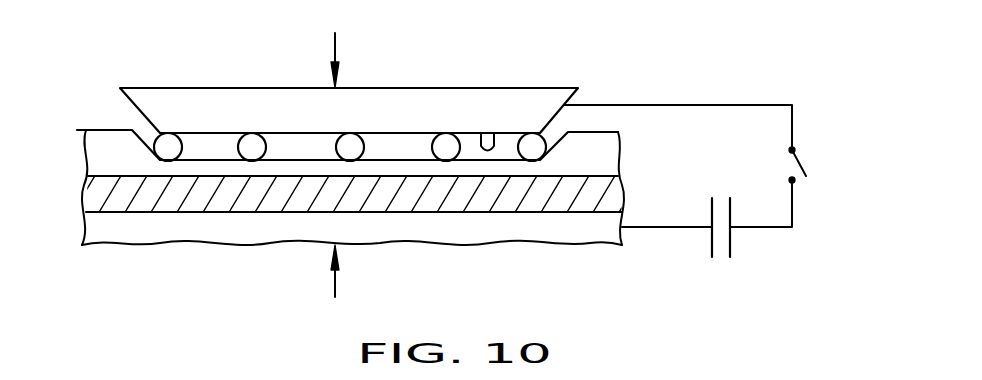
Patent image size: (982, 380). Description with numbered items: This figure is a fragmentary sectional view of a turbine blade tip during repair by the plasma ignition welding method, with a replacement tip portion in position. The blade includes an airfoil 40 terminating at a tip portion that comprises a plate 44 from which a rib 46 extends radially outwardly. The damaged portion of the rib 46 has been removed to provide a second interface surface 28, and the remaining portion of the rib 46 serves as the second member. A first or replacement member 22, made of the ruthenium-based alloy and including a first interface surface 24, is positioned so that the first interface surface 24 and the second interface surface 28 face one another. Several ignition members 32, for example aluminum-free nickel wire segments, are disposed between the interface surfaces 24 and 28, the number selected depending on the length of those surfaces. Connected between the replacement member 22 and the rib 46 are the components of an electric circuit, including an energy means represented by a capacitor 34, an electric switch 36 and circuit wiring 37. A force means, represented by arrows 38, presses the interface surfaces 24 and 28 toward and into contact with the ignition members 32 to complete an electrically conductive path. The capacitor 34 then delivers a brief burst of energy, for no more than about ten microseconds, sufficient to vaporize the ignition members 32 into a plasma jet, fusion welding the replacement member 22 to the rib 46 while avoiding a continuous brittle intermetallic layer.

The first member 22 is at (193, 100).
The first interface surface 24 is at (482, 140).
The second interface surface 28 is at (212, 157).
The ignition member 32 is at (170, 142).
The capacitor 34 is at (721, 197).
The electric switch 36 is at (800, 165).
The circuit wiring 37 is at (637, 105).
The force means 38 is at (336, 52).
The airfoil 40 is at (547, 228).
The plate 44 is at (587, 193).
The rib 46 is at (110, 157).